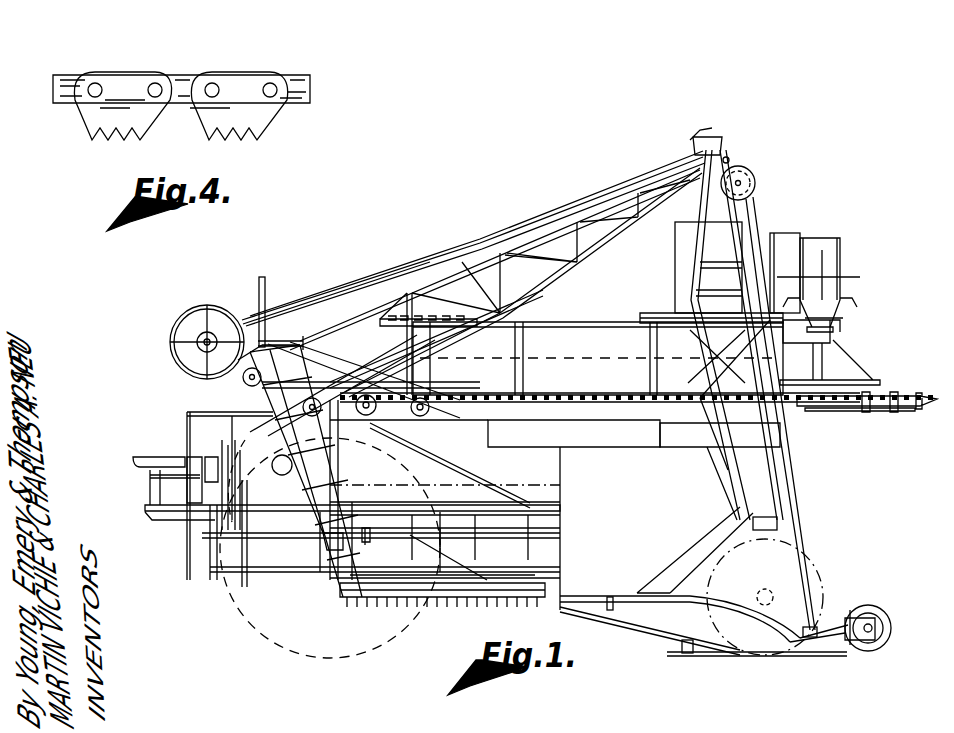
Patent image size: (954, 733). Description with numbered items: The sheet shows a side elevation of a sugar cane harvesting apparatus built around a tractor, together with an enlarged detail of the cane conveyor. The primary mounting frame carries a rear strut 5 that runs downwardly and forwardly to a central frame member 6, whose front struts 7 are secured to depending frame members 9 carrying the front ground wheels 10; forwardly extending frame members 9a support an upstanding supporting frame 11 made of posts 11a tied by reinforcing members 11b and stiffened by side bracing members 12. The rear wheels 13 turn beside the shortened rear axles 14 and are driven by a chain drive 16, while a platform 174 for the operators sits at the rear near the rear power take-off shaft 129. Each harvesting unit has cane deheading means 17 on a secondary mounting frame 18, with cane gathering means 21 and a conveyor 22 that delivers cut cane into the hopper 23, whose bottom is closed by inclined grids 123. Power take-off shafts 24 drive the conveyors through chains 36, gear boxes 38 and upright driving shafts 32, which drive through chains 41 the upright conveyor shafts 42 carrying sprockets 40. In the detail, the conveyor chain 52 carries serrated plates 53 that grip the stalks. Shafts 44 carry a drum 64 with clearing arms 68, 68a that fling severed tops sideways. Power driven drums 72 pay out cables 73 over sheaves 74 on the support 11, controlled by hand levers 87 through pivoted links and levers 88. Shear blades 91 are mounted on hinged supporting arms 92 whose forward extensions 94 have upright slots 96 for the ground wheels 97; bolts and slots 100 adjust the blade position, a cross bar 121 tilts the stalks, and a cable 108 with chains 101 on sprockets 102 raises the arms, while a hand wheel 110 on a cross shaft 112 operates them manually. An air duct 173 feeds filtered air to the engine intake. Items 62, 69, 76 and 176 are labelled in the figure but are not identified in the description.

In FIG. 4, the conveyor chain 52 is at (302, 78).
In FIG. 4, the serrated plates 53 is at (205, 125).
In FIG. 1, the sheaves 74 is at (725, 140).
In FIG. 1, the cables 73 is at (635, 187).
In FIG. 1, the chains 101 is at (732, 160).
In FIG. 1, the sprockets 102 is at (745, 182).
In FIG. 1, the air duct 173 is at (762, 222).
In FIG. 1, the hopper side 69 is at (793, 248).
In FIG. 1, the drum 64 is at (838, 260).
In FIG. 1, the clearing arms 68 is at (860, 277).
In FIG. 1, the clearing arms 68a is at (858, 303).
In FIG. 1, the cane deheading means 17 is at (864, 324).
In FIG. 1, the chute brace 62 is at (845, 335).
In FIG. 1, the shafts 44 is at (815, 370).
In FIG. 1, the cane gathering means 21 is at (898, 424).
In FIG. 1, the side bracing members 12 is at (500, 262).
In FIG. 1, the upstanding supporting frame 11 is at (690, 250).
In FIG. 1, the reinforcing members 11b is at (712, 268).
In FIG. 1, the posts 11a is at (712, 292).
In FIG. 1, the secondary mounting frames 18 is at (585, 327).
In FIG. 1, the upright slots 96 is at (428, 263).
In FIG. 1, the upright driving shafts 32 is at (393, 313).
In FIG. 1, the chains 41 is at (438, 316).
In FIG. 1, the hand levers 87 is at (267, 280).
In FIG. 1, the pivoted links and levers 88 is at (272, 340).
In FIG. 1, the hand wheel 110 is at (190, 318).
In FIG. 1, the cross shaft 112 is at (200, 345).
In FIG. 1, the power driven drums 72 is at (318, 340).
In FIG. 1, the chains 36 is at (330, 355).
In FIG. 1, the gear boxes 38 is at (382, 365).
In FIG. 1, the sprockets 40 is at (428, 402).
In FIG. 1, the upright conveyor shafts 42 is at (415, 412).
In FIG. 1, the frame brace 76 is at (690, 330).
In FIG. 1, the conveyor 22 is at (575, 401).
In FIG. 1, the forwardly extending frame members 9a is at (620, 448).
In FIG. 1, the depending frame members 9 is at (763, 463).
In FIG. 1, the cable 108 is at (797, 492).
In FIG. 1, the rear strut 5 is at (258, 400).
In FIG. 1, the power take-off shafts 24 is at (345, 435).
In FIG. 1, the side frame 176 is at (150, 458).
In FIG. 1, the power take-off shaft 129 is at (172, 478).
In FIG. 1, the platform 174 is at (158, 515).
In FIG. 1, the rear axles 14 is at (272, 470).
In FIG. 1, the chain drive 16 is at (283, 582).
In FIG. 1, the rear wheels 13 is at (258, 637).
In FIG. 1, the hopper 23 is at (442, 627).
In FIG. 1, the grids 123 is at (385, 608).
In FIG. 1, the central frame member 6 is at (600, 596).
In FIG. 1, the cross bar 121 is at (610, 612).
In FIG. 1, the supporting arms 92 is at (658, 635).
In FIG. 1, the bolts and slots 100 is at (686, 655).
In FIG. 1, the shear blades 91 is at (772, 658).
In FIG. 1, the front struts 7 is at (700, 560).
In FIG. 1, the front ground wheels 10 is at (815, 562).
In FIG. 1, the ground wheels 97 is at (880, 632).
In FIG. 1, the forward extensions 94 is at (862, 652).